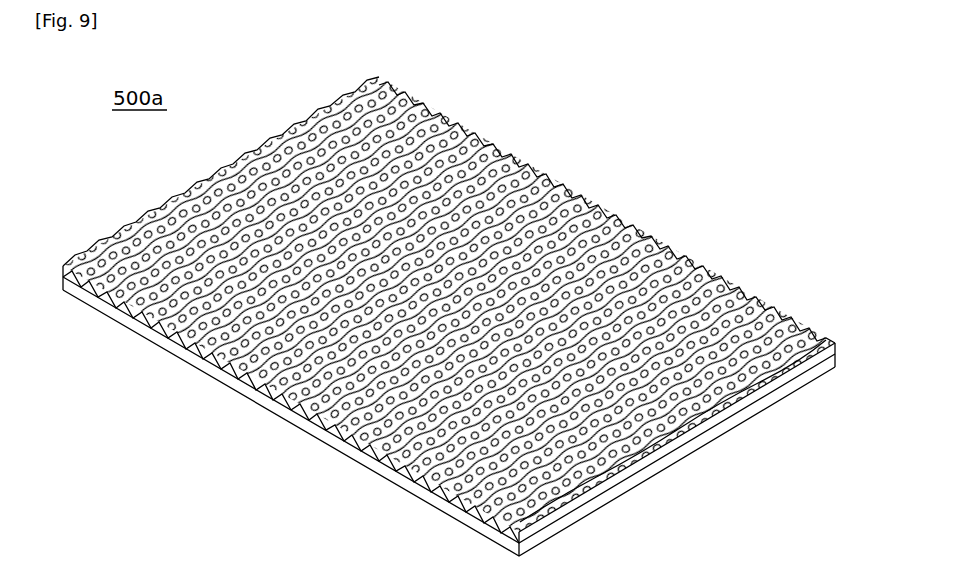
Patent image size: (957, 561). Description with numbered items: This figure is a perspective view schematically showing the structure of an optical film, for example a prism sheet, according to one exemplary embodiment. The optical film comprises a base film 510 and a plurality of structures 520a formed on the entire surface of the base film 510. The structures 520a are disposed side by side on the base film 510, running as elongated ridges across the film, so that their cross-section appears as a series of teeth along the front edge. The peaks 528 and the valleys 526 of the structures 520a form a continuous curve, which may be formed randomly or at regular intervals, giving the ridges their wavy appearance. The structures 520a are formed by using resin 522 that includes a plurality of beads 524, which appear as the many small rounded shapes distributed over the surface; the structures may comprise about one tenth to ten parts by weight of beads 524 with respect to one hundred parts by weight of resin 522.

The base film 510 is at (315, 432).
The structures 520a is at (672, 550).
The resin 522 is at (590, 490).
The beads 524 is at (645, 458).
The valleys 526 is at (207, 352).
The peaks 528 is at (236, 358).